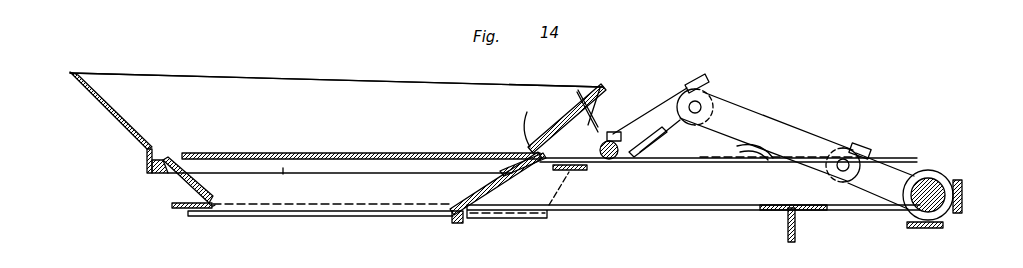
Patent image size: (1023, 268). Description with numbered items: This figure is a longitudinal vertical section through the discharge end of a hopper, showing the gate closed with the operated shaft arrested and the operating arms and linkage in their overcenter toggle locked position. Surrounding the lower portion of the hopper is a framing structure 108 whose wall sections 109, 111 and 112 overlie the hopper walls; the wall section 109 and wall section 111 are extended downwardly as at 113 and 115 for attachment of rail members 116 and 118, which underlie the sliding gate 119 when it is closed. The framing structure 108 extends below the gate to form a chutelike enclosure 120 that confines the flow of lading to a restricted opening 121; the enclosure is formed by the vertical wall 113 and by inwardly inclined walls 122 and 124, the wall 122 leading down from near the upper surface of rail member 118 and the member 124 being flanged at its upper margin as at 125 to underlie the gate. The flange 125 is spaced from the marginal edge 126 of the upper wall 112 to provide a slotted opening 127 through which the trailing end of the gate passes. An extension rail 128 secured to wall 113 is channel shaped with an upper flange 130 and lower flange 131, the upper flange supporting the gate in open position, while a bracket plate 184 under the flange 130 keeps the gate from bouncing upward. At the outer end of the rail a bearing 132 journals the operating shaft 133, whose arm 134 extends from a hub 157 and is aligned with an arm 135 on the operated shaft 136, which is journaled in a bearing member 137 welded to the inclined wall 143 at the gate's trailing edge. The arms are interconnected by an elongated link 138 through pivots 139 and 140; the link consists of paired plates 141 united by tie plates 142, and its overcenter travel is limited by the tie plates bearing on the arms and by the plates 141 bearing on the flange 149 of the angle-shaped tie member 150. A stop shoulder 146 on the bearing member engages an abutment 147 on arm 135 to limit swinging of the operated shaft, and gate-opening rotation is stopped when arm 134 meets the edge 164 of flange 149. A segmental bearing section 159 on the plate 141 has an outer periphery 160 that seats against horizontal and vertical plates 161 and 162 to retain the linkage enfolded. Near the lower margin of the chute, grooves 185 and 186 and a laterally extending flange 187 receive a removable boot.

The framing structure 108 is at (80, 104).
The wall section 109 is at (306, 79).
The wall section 111 is at (86, 90).
The wall section 112 is at (598, 88).
The downward wall extension 113 is at (338, 148).
The downward wall extension 115 is at (147, 156).
The rail member 116 is at (284, 173).
The rail member 118 is at (148, 170).
The sliding gate 119 is at (231, 153).
The chutelike enclosure 120 is at (160, 190).
The restricted opening 121 is at (258, 186).
The inwardly inclined wall 122 is at (181, 179).
The inclined wall member 124 is at (498, 185).
The flange 125 is at (533, 168).
The marginal edge 126 is at (526, 146).
The slotted opening 127 is at (510, 152).
The extension rail 128 is at (666, 211).
The upper flange 130 is at (718, 158).
The lower flange 131 is at (601, 211).
The bearing 132 is at (946, 214).
The operating shaft 133 is at (926, 184).
The arm 134 is at (886, 175).
The arm 135 is at (650, 110).
The operated shaft 136 is at (613, 131).
The bearing member 137 is at (607, 159).
The elongated link 138 is at (771, 111).
The pivot 139 is at (843, 159).
The pivot 140 is at (700, 103).
The plate 141 is at (786, 133).
The tie plate 142 is at (702, 78).
The inclined wall 143 is at (582, 135).
The stop shoulder 146 is at (633, 166).
The abutment 147 is at (652, 148).
The flange 149 is at (813, 207).
The tie member 150 is at (798, 232).
The hub 157 is at (910, 212).
The segmental bearing section 159 is at (748, 152).
The outer periphery 160 is at (777, 113).
The plate 161 is at (929, 229).
The plate 162 is at (963, 196).
The edge 164 is at (825, 211).
The bracket plate 184 is at (573, 171).
The groove 185 is at (336, 217).
The groove 186 is at (455, 223).
The laterally extending flange 187 is at (178, 209).